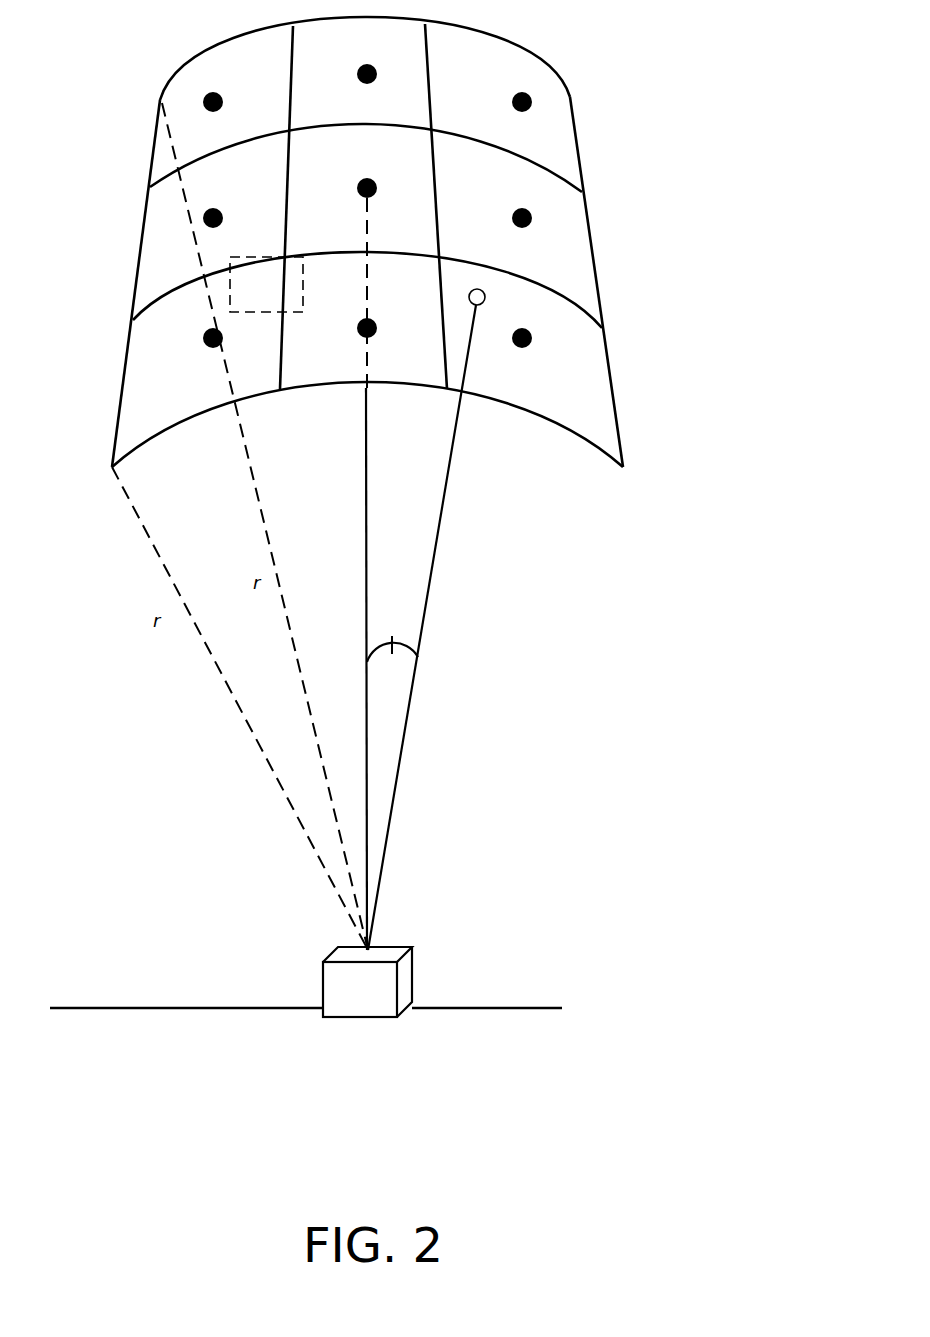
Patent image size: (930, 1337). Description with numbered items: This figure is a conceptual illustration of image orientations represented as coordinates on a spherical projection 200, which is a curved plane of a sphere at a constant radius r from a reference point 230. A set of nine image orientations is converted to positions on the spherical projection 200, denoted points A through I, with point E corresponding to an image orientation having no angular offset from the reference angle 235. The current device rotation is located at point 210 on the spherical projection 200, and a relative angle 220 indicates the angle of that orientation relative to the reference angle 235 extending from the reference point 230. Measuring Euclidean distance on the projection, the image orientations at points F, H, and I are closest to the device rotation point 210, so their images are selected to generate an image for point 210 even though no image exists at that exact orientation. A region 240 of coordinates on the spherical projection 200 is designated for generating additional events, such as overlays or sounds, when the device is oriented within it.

The spherical projection 200 is at (575, 110).
The device rotation point 210 is at (484, 293).
The relative angle 220 is at (430, 653).
The reference point 230 is at (323, 978).
The reference angle 235 is at (363, 562).
The region 240 is at (266, 284).